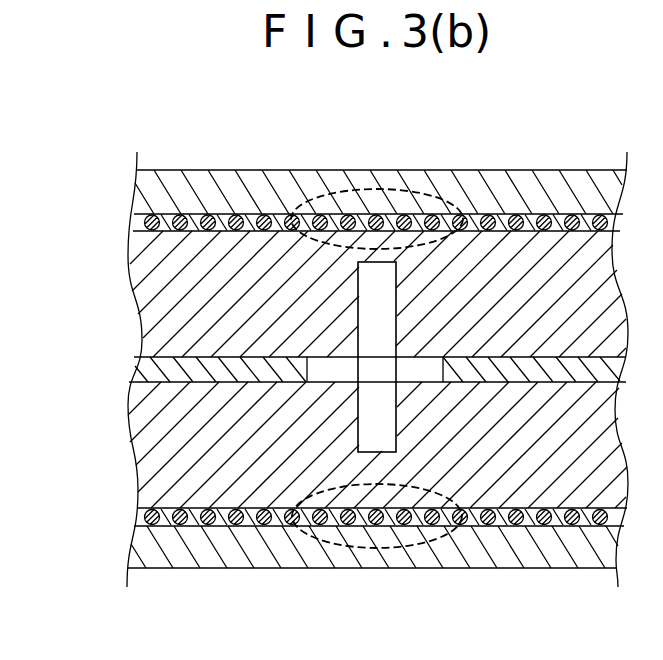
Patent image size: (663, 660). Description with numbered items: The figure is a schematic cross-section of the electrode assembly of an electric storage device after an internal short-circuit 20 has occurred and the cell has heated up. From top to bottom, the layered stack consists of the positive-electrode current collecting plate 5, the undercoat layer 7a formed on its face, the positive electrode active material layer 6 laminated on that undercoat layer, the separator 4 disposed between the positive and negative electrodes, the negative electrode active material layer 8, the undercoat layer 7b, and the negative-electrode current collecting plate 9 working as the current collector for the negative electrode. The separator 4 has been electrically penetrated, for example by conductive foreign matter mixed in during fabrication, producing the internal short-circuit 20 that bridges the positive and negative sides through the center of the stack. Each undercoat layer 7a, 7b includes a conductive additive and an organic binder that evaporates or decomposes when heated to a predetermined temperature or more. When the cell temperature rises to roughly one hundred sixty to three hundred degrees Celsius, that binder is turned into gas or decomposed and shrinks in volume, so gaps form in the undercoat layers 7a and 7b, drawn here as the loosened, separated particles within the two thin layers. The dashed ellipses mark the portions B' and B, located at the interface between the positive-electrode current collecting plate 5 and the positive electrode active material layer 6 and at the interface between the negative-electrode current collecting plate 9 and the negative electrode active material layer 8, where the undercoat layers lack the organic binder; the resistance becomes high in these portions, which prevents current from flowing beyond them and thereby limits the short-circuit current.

The internal short-circuit 20 is at (530, 170).
The positive-electrode current collecting plate 5 is at (136, 192).
The undercoat layer 7a is at (132, 227).
The positive electrode active material layer 6 is at (147, 292).
The separator 4 is at (147, 368).
The negative electrode active material layer 8 is at (147, 440).
The undercoat layer 7b is at (135, 513).
The negative-electrode current collecting plate 9 is at (137, 545).
The portion lacking organic binder B' is at (377, 170).
The portion lacking organic binder B is at (377, 564).